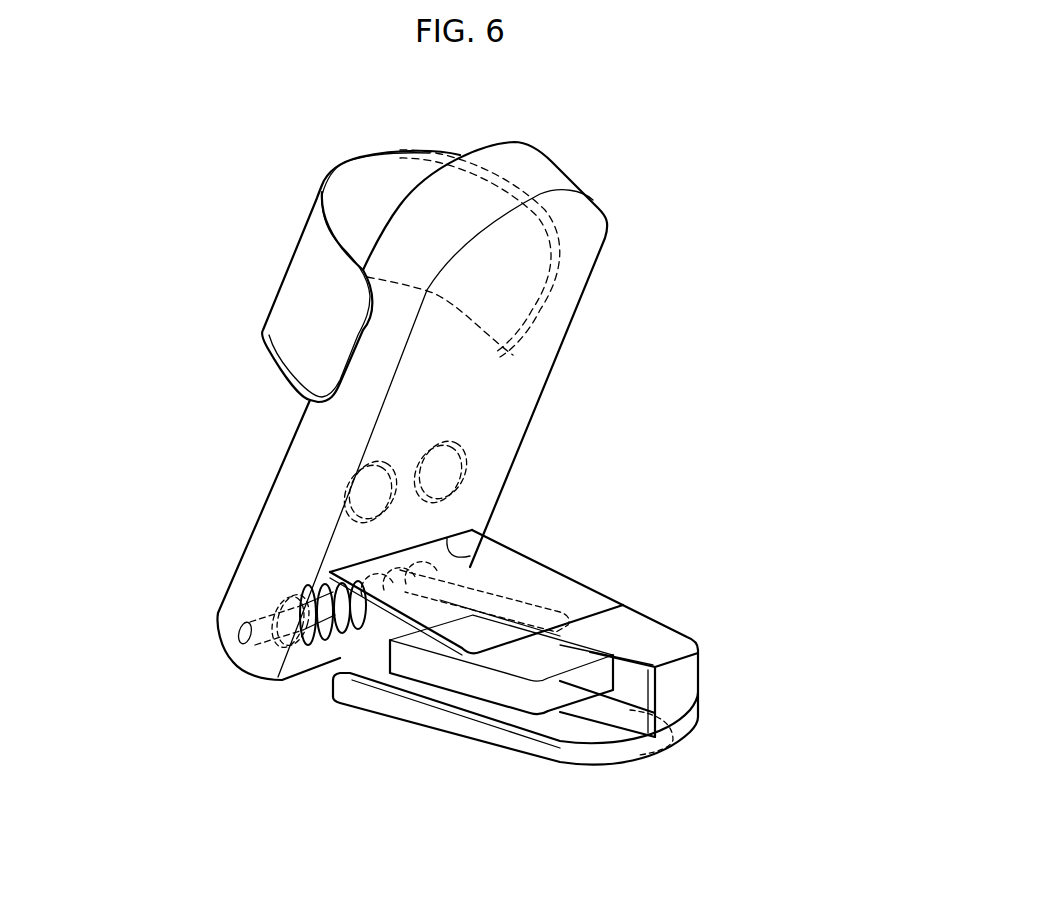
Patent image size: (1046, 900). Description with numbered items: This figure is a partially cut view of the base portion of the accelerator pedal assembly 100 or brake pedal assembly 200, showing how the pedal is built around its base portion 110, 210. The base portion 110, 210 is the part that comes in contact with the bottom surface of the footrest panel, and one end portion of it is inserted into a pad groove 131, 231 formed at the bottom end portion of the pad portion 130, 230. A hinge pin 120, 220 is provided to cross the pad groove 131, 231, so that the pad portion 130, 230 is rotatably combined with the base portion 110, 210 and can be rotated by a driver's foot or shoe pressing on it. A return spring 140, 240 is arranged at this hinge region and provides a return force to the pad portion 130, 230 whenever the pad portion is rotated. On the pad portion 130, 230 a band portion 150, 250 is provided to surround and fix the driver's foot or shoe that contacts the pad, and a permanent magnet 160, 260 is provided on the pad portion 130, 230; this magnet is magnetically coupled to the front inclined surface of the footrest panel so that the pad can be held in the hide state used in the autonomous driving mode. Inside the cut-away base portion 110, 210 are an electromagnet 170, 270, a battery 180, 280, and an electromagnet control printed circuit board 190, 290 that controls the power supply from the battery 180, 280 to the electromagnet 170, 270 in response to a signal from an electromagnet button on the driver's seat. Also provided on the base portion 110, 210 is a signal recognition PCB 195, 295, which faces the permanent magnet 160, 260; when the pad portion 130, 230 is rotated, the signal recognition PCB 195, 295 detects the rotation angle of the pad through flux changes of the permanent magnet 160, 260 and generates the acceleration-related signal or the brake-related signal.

The accelerator pedal assembly 100 is at (462, 510).
The brake pedal assembly 200 is at (616, 244).
The base portion 110 is at (664, 642).
The base portion 210 is at (690, 676).
The hinge pin 120 is at (185, 621).
The hinge pin 220 is at (238, 635).
The pad portion 130 is at (477, 411).
The pad portion 230 is at (525, 382).
The pad groove 131 is at (571, 538).
The pad groove 231 is at (450, 557).
The return spring 140 is at (348, 674).
The return spring 240 is at (332, 640).
The band portion 150 is at (280, 276).
The band portion 250 is at (303, 290).
The permanent magnet 160 is at (553, 482).
The permanent magnet 260 is at (367, 497).
The electromagnet 170 is at (515, 776).
The electromagnet 270 is at (560, 752).
The battery 180 is at (471, 747).
The battery 280 is at (417, 663).
The electromagnet control printed circuit board 190 is at (456, 762).
The electromagnet control printed circuit board 290 is at (497, 708).
The signal recognition PCB 195 is at (576, 592).
The signal recognition PCB 295 is at (472, 632).